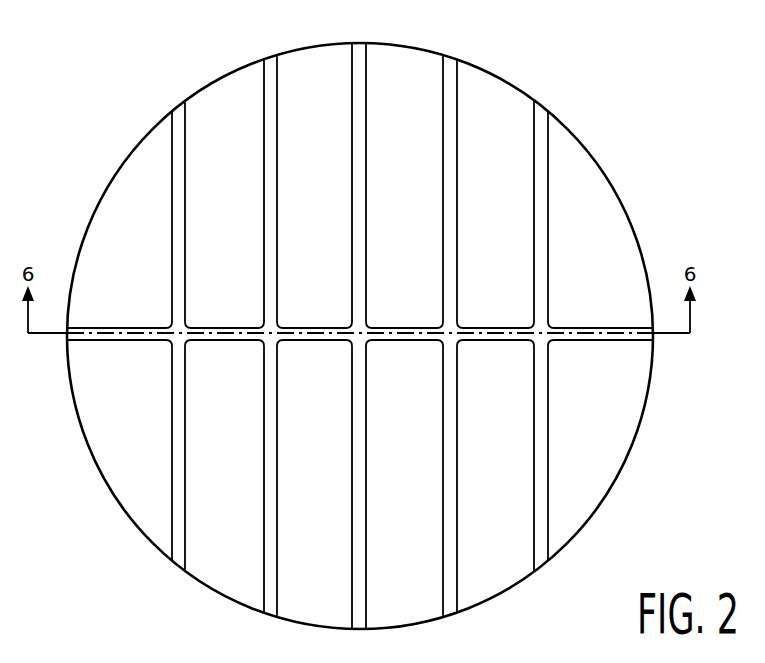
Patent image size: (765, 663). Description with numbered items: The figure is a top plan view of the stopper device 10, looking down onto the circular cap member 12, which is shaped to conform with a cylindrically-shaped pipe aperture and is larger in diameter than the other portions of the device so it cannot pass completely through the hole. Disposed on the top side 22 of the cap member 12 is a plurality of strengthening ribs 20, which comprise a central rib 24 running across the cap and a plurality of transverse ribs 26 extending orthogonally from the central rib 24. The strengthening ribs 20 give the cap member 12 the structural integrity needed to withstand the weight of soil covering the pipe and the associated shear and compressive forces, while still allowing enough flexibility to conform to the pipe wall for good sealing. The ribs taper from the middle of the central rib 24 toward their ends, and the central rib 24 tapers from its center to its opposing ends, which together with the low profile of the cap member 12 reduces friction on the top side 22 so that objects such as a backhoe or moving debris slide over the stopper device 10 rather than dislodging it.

The stopper device 10 is at (364, 337).
The cap member 12 is at (498, 593).
The strengthening ribs 20 is at (171, 331).
The top side 22 is at (364, 336).
The central rib 24 is at (405, 343).
The transverse ribs 26 is at (549, 196).